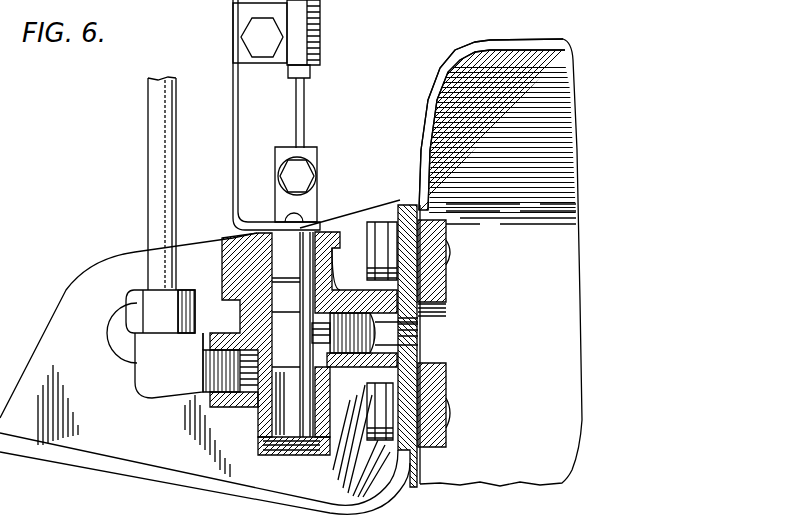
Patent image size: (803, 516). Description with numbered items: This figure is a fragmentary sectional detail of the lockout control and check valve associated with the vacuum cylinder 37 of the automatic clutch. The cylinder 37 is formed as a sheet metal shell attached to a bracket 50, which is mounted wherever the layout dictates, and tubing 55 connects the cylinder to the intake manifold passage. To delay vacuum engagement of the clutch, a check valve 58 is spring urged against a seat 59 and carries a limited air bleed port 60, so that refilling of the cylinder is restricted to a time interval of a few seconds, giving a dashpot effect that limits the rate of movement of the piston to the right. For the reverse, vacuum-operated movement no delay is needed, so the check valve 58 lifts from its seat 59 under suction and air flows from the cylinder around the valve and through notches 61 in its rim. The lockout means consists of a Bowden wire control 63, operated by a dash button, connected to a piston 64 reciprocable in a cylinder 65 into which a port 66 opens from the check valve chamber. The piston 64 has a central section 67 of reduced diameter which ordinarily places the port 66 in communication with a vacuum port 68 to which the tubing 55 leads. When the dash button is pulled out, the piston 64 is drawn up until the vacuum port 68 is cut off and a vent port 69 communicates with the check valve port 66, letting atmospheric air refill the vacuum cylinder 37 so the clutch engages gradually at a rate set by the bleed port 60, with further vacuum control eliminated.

The vacuum cylinder 37 is at (512, 56).
The bracket 50 is at (212, 480).
The tubing 55 is at (155, 173).
The check valve 58 is at (350, 300).
The seat 59 is at (405, 327).
The air bleed port 60 is at (400, 340).
The notches 61 is at (334, 367).
The Bowden wire control 63 is at (299, 108).
The piston 64 is at (287, 283).
The cylinder 65 is at (327, 232).
The port 66 is at (313, 335).
The central section of reduced diameter 67 is at (288, 437).
The vacuum port 68 is at (262, 427).
The vent port 69 is at (258, 290).